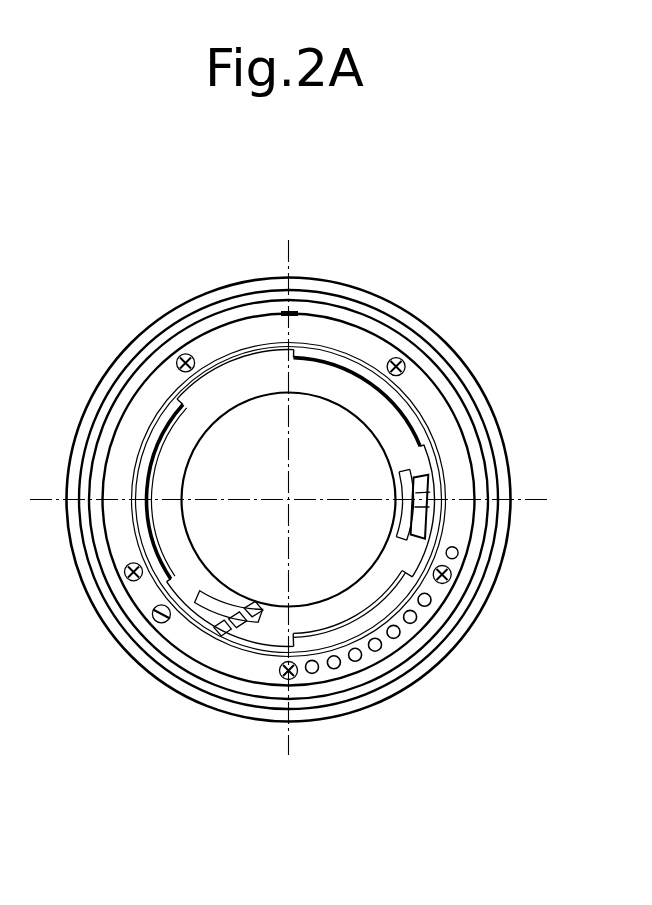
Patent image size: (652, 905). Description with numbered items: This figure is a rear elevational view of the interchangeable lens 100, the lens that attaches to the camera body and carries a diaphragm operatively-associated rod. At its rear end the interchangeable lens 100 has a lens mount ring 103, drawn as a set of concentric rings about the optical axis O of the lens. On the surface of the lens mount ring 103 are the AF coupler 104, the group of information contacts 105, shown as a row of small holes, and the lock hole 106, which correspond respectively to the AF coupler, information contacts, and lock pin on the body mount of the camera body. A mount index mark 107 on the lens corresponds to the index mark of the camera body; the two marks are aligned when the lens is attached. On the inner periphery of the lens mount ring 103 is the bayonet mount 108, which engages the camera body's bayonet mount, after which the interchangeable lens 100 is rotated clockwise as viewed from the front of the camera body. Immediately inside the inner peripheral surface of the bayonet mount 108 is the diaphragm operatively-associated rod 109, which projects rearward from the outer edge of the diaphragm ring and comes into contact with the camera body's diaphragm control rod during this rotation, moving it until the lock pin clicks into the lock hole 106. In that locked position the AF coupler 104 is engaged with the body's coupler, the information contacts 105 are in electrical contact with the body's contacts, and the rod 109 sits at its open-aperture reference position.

The interchangeable lens 100 is at (450, 205).
The lens mount ring 103 is at (424, 372).
The AF coupler 104 is at (163, 622).
The group of information contacts 105 is at (447, 588).
The lock hole 106 is at (459, 553).
The mount index mark 107 is at (296, 312).
The bayonet mount 108 is at (427, 443).
The diaphragm operatively-associated rod 109 is at (427, 497).
The optical axis O is at (290, 498).